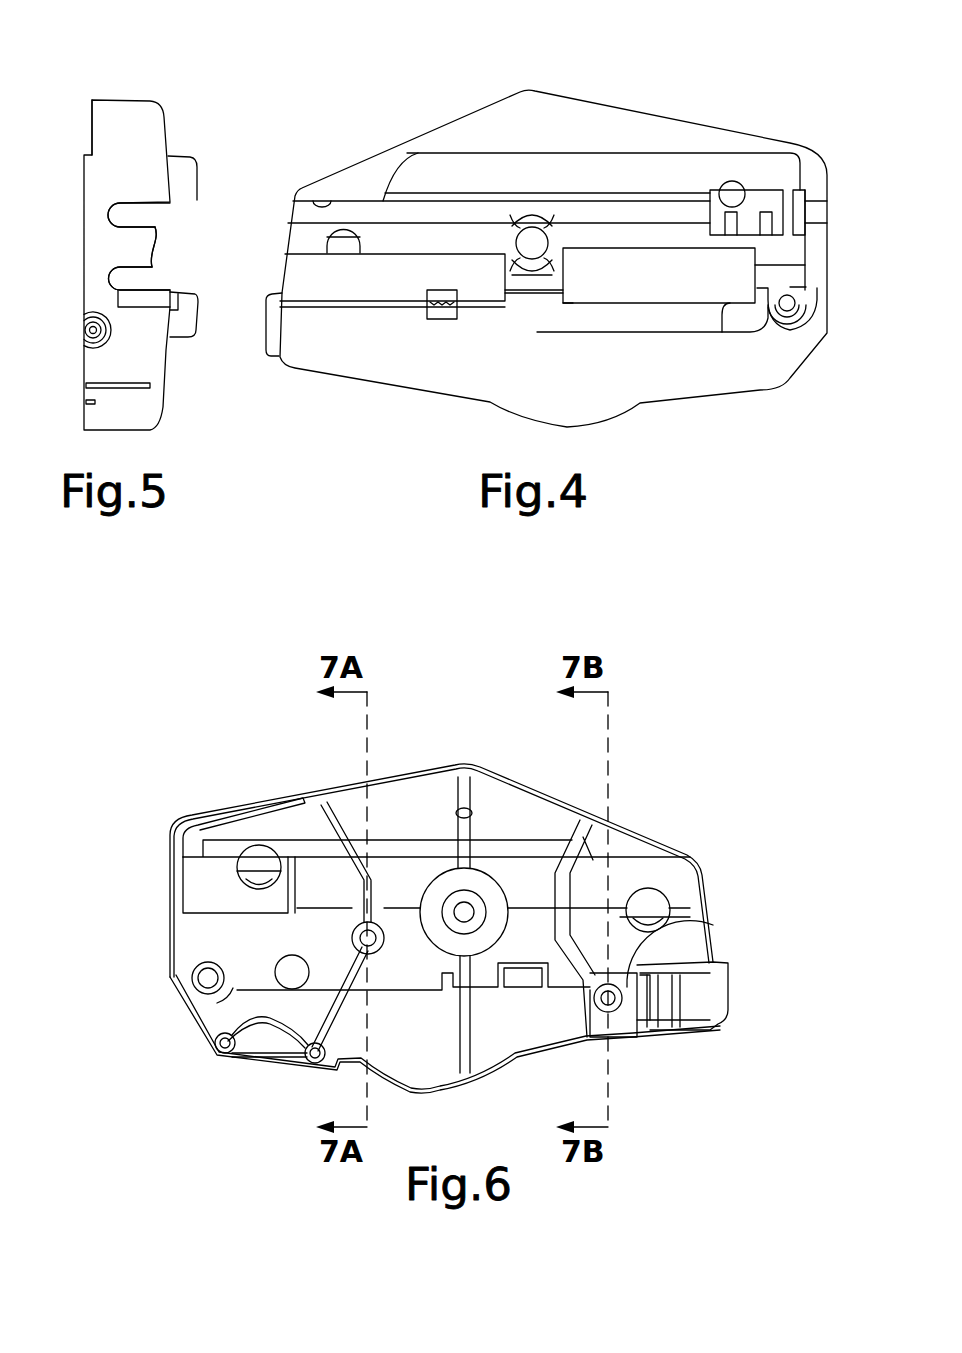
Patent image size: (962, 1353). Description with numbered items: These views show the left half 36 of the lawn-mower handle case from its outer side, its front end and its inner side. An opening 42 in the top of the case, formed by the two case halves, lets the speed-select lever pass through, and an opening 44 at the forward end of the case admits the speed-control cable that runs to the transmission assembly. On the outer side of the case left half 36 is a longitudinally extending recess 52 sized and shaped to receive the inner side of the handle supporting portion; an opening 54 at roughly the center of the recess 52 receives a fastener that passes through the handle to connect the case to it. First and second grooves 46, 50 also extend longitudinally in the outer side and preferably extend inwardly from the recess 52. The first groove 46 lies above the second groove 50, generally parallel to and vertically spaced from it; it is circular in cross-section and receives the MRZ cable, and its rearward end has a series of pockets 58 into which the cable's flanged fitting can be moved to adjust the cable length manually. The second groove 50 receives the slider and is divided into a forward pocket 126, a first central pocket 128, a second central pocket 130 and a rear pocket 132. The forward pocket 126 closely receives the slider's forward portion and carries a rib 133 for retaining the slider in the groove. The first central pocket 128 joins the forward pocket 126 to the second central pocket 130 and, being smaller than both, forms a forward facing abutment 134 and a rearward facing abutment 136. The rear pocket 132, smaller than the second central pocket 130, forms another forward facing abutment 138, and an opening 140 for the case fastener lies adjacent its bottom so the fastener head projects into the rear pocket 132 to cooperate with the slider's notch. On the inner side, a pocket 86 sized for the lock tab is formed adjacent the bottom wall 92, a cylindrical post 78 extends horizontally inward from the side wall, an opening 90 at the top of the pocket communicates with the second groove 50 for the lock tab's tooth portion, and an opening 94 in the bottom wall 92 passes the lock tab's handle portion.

In FIG. 5, the case left half 36 is at (74, 80).
In FIG. 4, the case left half 36 is at (669, 78).
In FIG. 6, the case left half 36 is at (205, 763).
In FIG. 5, the opening 42 is at (92, 131).
In FIG. 5, the opening 44 is at (83, 335).
In FIG. 5, the first groove 46 is at (157, 205).
In FIG. 4, the first groove 46 is at (328, 207).
In FIG. 5, the second groove 50 is at (150, 285).
In FIG. 4, the second groove 50 is at (300, 290).
In FIG. 5, the recess 52 is at (157, 250).
In FIG. 4, the recess 52 is at (407, 237).
In FIG. 4, the opening 54 is at (532, 227).
In FIG. 6, the opening 54 is at (478, 898).
In FIG. 4, the pockets 58 is at (757, 223).
In FIG. 6, the post 78 is at (623, 1007).
In FIG. 6, the pocket 86 is at (612, 1047).
In FIG. 6, the opening 90 is at (713, 925).
In FIG. 6, the bottom wall 92 is at (590, 1053).
In FIG. 6, the opening 94 is at (612, 1005).
In FIG. 4, the forward pocket 126 is at (410, 303).
In FIG. 4, the first central pocket 128 is at (527, 283).
In FIG. 4, the second central pocket 130 is at (660, 303).
In FIG. 4, the rear pocket 132 is at (798, 287).
In FIG. 5, the rib 133 is at (193, 298).
In FIG. 4, the rib 133 is at (443, 319).
In FIG. 4, the forward facing abutment 134 is at (500, 301).
In FIG. 4, the rearward facing abutment 136 is at (573, 293).
In FIG. 4, the forward facing abutment 138 is at (727, 303).
In FIG. 4, the opening 140 is at (785, 307).
In FIG. 6, the opening 140 is at (200, 975).